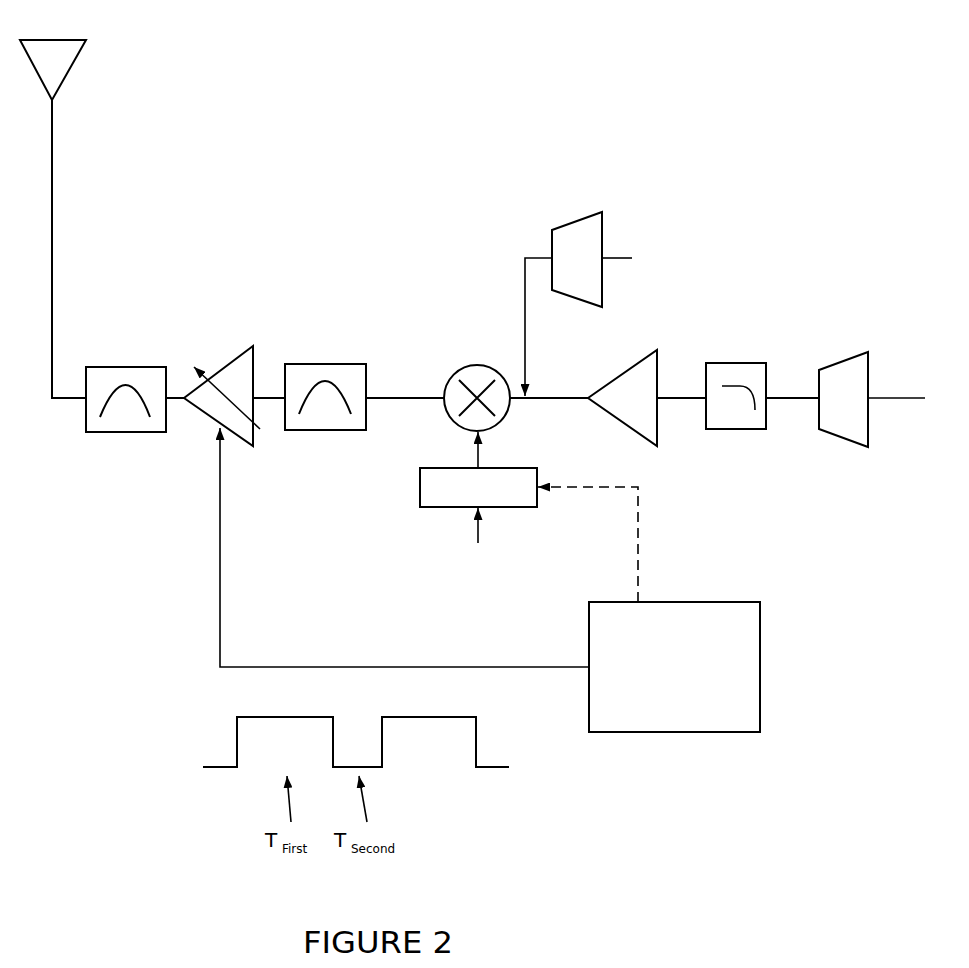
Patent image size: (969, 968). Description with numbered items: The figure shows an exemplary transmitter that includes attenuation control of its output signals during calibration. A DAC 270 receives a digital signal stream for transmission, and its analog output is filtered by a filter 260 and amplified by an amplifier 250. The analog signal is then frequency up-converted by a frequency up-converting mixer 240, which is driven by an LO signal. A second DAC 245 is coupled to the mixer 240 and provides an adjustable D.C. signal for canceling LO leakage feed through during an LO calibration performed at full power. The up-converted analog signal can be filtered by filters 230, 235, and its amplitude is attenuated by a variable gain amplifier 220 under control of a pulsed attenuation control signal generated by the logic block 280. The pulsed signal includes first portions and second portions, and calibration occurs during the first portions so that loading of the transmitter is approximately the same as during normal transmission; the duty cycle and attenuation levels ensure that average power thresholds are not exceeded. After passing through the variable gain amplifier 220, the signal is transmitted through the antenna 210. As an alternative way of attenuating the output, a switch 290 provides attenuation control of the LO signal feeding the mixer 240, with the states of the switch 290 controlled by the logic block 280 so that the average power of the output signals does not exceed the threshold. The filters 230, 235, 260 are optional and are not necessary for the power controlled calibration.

The antenna 210 is at (58, 128).
The variable gain amplifier 220 is at (234, 365).
The filter 230 is at (316, 368).
The filter 235 is at (142, 375).
The frequency up-converting mixer 240 is at (471, 370).
The DAC 245 is at (573, 238).
The amplifier 250 is at (636, 375).
The filter 260 is at (739, 366).
The DAC 270 is at (851, 372).
The logic block 280 is at (742, 633).
The switch 290 is at (439, 492).